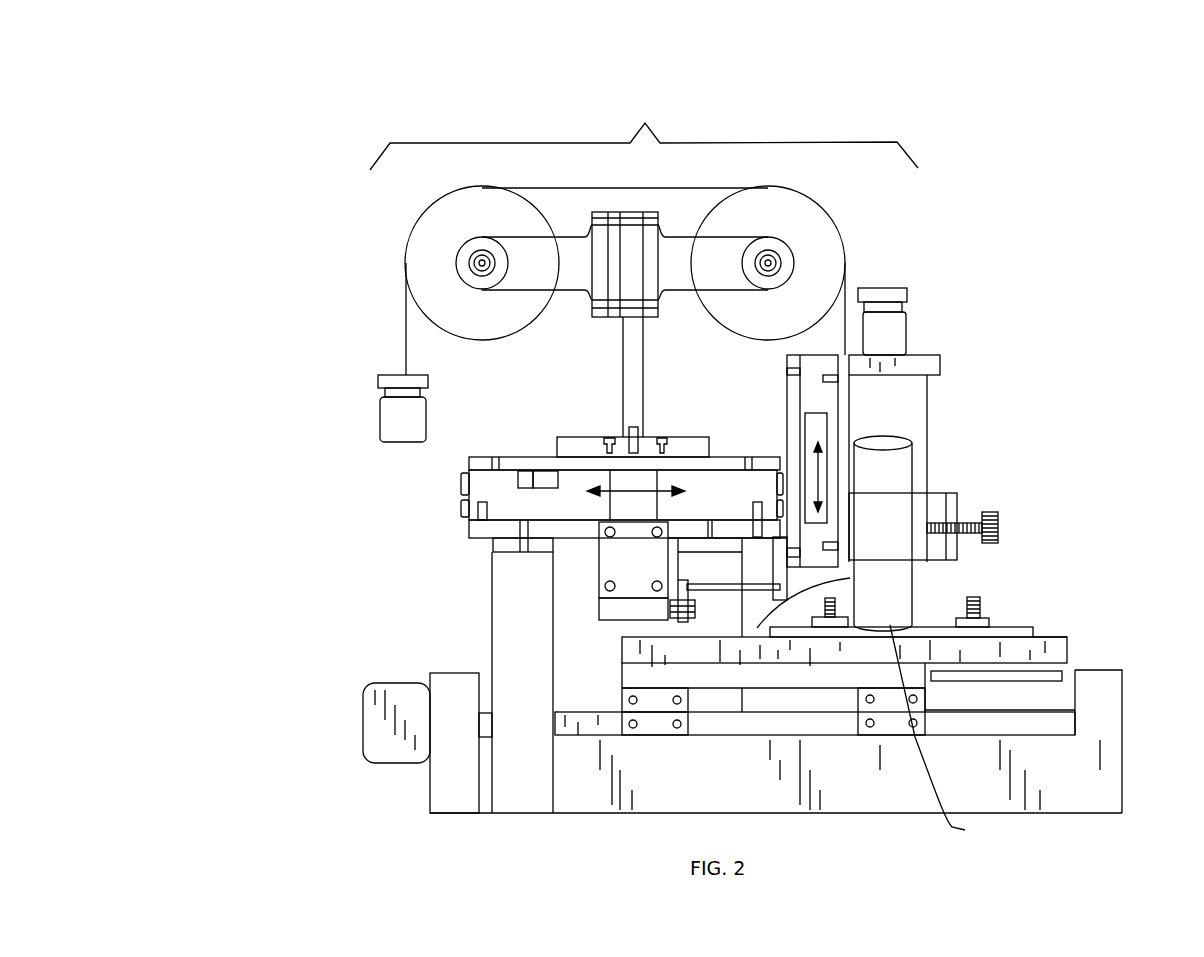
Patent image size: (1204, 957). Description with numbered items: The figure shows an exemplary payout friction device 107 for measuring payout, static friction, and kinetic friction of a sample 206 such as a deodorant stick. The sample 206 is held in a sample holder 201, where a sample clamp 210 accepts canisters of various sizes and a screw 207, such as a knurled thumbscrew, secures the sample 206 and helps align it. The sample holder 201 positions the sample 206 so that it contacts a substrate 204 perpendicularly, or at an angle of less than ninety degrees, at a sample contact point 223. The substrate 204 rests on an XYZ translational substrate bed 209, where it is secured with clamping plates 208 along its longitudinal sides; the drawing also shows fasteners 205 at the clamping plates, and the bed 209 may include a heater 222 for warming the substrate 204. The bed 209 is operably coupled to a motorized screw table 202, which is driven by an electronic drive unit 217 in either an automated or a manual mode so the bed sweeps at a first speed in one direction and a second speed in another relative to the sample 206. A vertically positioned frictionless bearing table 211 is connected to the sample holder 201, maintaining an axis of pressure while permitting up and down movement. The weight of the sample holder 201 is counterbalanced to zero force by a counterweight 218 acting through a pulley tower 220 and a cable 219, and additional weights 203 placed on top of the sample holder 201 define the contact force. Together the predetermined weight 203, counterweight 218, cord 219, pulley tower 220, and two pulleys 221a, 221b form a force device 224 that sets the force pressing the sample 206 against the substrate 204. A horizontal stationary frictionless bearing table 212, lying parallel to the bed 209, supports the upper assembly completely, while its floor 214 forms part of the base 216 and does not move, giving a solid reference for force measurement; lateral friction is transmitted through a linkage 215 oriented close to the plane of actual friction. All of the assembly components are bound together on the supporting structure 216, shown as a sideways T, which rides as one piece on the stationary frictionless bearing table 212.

The payout friction device 107 is at (257, 82).
The sample holder 201 is at (928, 470).
The motorized screw table 202 is at (1050, 702).
The predetermined weight 203 is at (888, 336).
The substrate 204 is at (1040, 630).
The fastening screws 205 is at (970, 598).
The sample 206 is at (897, 462).
The screw 207 is at (998, 530).
The clamping plates 208 is at (1020, 627).
The XYZ translational substrate bed 209 is at (1063, 640).
The sample clamp 210 is at (957, 503).
The frictionless bearing table 211 is at (808, 388).
The stationary frictionless bearing table 212 is at (565, 480).
The stationary frictionless bearing table floor 214 is at (475, 530).
The linkage 215 is at (780, 580).
The supporting structure 216 is at (478, 465).
The electronic drive unit 217 is at (393, 752).
The counterweight 218 is at (395, 418).
The cable 219 is at (577, 188).
The pulley tower 220 is at (661, 264).
The pulley 221a is at (432, 238).
The pulley 221b is at (807, 230).
The heater 222 is at (1060, 672).
The sample contact point 223 is at (954, 734).
The force device 224 is at (644, 134).